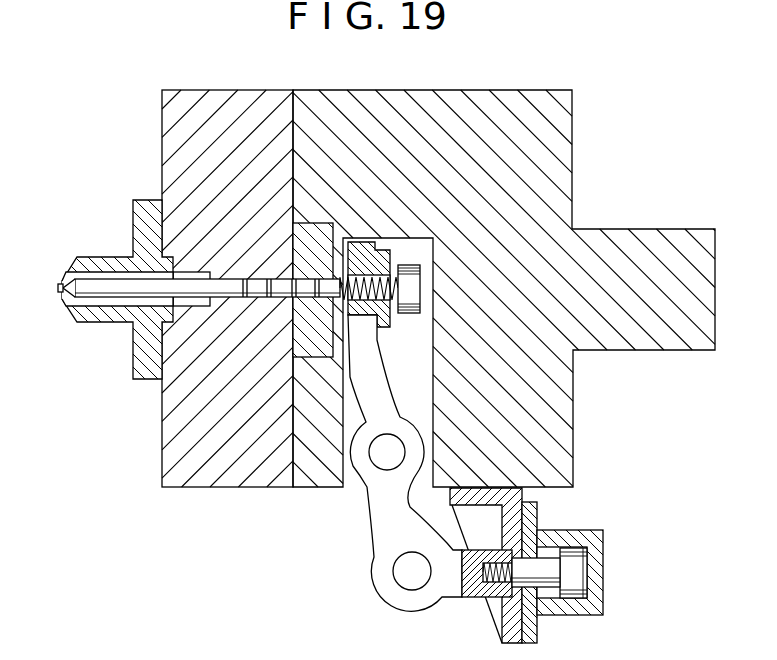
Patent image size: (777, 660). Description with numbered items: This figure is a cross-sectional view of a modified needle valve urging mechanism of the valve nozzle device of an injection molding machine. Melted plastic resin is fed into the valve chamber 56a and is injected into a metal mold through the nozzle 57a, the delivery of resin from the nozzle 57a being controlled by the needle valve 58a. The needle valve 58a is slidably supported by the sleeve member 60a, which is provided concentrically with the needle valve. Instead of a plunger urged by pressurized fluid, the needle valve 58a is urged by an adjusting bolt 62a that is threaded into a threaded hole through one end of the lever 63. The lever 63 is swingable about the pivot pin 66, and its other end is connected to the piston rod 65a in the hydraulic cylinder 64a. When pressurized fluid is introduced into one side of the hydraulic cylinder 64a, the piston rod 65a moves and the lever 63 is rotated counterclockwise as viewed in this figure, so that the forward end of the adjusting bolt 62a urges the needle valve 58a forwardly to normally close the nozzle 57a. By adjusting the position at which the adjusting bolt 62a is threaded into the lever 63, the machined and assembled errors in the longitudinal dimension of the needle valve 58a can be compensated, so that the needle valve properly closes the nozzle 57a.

The valve chamber 56a is at (103, 303).
The nozzle 57a is at (58, 288).
The needle valve 58a is at (97, 287).
The sleeve member 60a is at (313, 227).
The adjusting bolt 62a is at (407, 266).
The lever 63 is at (389, 463).
The hydraulic cylinder 64a is at (568, 607).
The piston rod 65a is at (458, 588).
The pivot pin 66 is at (377, 487).